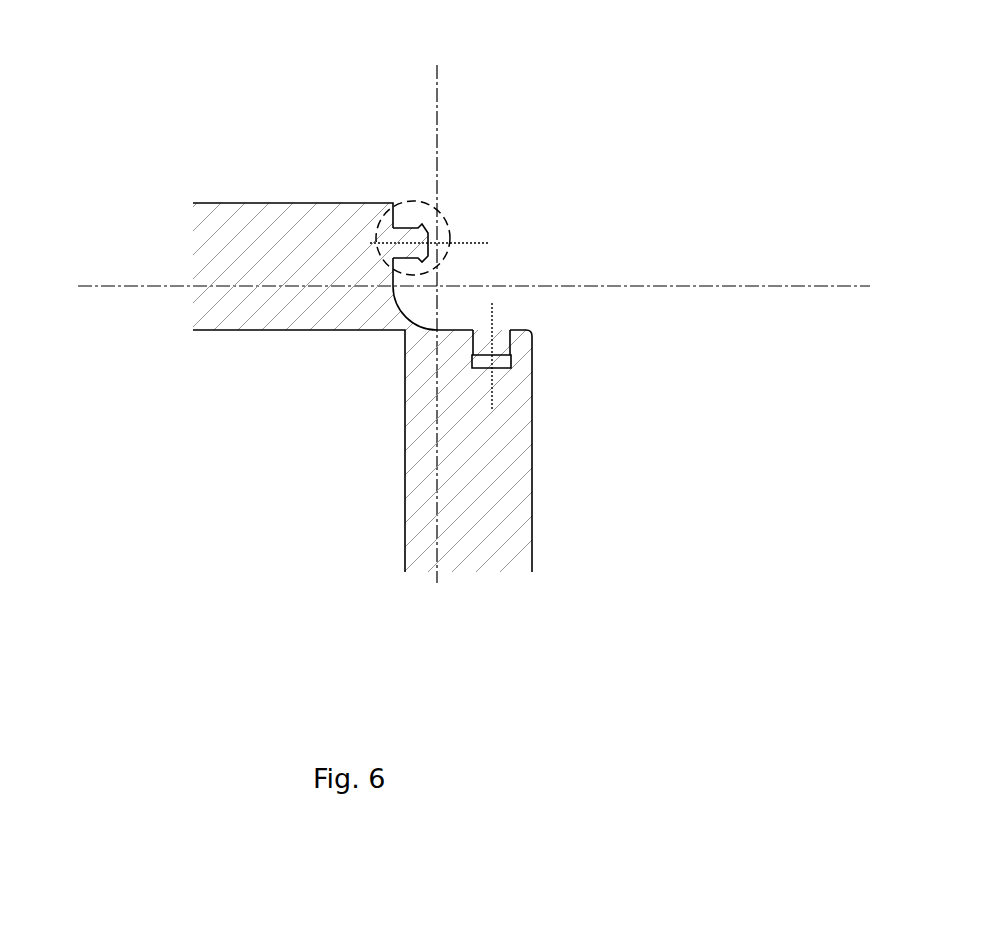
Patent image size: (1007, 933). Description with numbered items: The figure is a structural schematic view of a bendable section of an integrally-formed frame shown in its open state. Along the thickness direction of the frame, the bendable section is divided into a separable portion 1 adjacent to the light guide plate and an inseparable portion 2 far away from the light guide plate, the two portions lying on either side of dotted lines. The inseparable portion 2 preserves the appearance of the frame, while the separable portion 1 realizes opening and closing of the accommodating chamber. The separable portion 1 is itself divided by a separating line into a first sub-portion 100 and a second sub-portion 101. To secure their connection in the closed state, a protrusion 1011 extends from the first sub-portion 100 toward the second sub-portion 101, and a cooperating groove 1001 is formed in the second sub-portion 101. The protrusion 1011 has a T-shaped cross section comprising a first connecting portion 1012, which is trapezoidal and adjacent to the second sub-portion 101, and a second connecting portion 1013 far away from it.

The separable portion 1 is at (193, 258).
The inseparable portion 2 is at (193, 332).
The first sub-portion 100 is at (273, 230).
The second sub-portion 101 is at (533, 477).
The groove 1001 is at (493, 340).
The protrusion 1011 is at (455, 230).
The first connecting portion 1012 is at (445, 213).
The second connecting portion 1013 is at (407, 230).